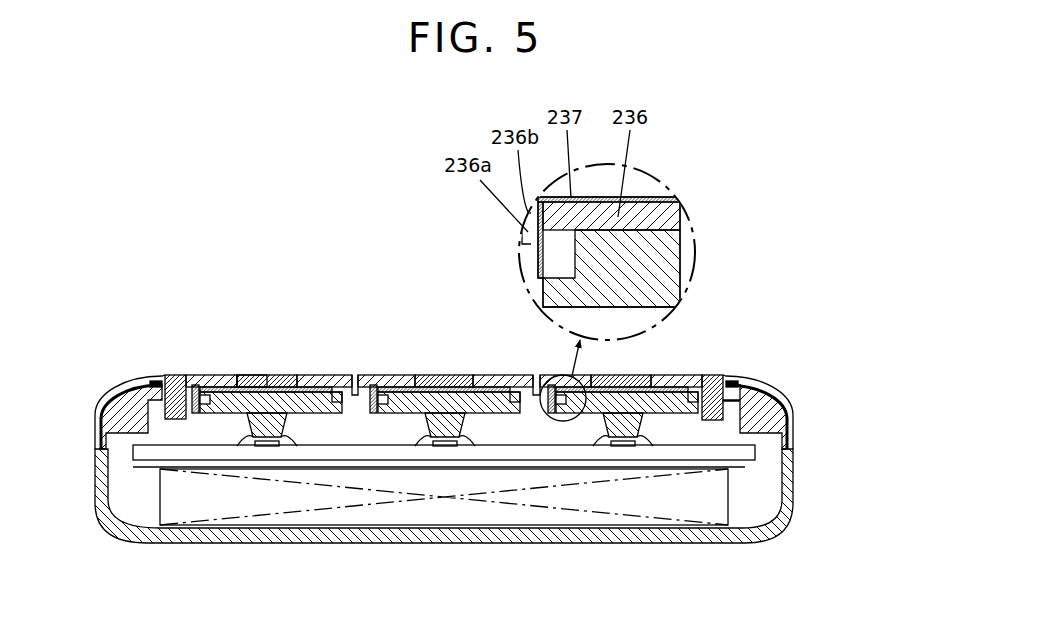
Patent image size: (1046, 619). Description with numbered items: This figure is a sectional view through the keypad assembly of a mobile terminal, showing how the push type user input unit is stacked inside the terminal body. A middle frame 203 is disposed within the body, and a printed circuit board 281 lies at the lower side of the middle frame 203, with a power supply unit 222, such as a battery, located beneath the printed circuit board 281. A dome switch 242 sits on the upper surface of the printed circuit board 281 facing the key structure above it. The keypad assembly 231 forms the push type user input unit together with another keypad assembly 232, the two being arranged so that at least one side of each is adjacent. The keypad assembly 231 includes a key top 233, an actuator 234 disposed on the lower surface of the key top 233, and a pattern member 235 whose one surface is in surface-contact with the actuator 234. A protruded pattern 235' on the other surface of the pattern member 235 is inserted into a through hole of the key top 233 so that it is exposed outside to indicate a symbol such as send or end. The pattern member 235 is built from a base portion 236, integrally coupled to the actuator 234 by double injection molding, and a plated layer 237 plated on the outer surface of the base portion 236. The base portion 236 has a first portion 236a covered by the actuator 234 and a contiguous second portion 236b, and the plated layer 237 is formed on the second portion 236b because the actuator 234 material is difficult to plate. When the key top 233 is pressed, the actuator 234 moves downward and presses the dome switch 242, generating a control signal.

The middle frame 203 is at (767, 407).
The power supply unit 222 is at (588, 500).
The keypad assembly 231 is at (697, 370).
The keypad assembly 232 is at (444, 326).
The key top 233 is at (323, 374).
The actuator 234 is at (212, 393).
The pattern member 235 is at (273, 326).
The protruded pattern 235' is at (243, 337).
The base portion 236 is at (618, 217).
The first portion 236a is at (528, 232).
The second portion 236b is at (541, 215).
The plated layer 237 is at (571, 198).
The dome switch 242 is at (470, 438).
The printed circuit board 281 is at (735, 453).